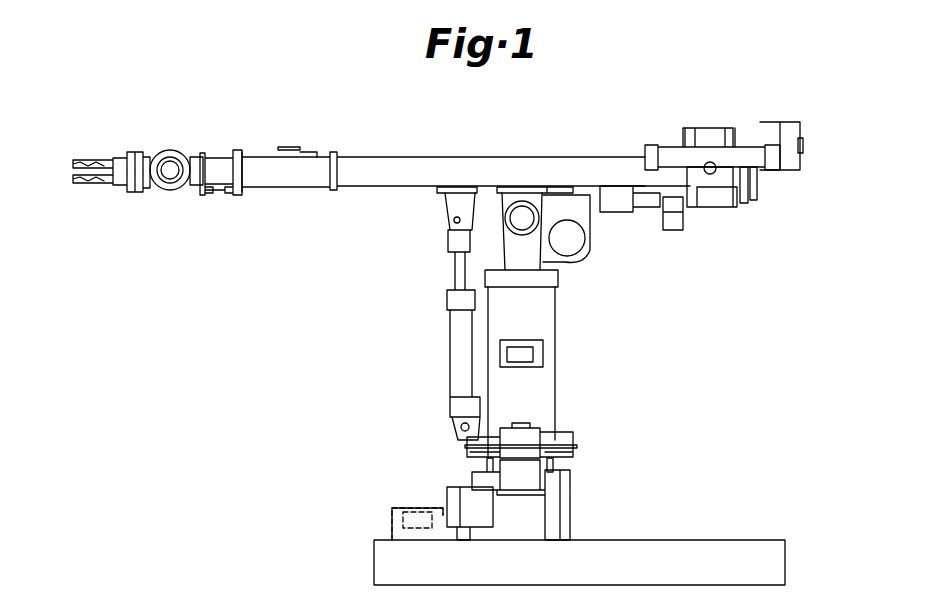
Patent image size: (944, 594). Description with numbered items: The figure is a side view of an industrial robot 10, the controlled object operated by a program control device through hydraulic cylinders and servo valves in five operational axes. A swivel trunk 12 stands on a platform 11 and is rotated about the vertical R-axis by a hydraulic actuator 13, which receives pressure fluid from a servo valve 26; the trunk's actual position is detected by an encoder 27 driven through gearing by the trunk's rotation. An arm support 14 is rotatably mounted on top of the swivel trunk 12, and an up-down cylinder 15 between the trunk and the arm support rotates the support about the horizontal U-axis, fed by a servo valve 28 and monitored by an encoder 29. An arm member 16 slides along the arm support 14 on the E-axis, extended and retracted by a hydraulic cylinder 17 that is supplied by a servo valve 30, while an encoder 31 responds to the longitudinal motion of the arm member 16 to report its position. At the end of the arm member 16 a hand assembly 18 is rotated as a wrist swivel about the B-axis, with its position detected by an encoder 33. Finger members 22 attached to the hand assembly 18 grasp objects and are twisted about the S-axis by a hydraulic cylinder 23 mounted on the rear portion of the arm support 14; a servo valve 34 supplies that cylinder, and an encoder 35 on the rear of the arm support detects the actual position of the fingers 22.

The industrial robot 10 is at (503, 152).
The platform 11 is at (628, 555).
The swivel trunk 12 is at (548, 382).
The hydraulic actuator 13 is at (470, 483).
The arm support 14 is at (456, 162).
The up-down cylinder 15 is at (460, 350).
The arm member 16 is at (218, 172).
The hydraulic cylinder 17 is at (405, 190).
The hand assembly 18 is at (156, 152).
The finger members 22 is at (114, 170).
The hydraulic cylinder 23 is at (668, 148).
The servo valve 26 is at (415, 508).
The encoder 27 is at (530, 445).
The servo valve 28 is at (530, 352).
The encoder 29 is at (575, 245).
The servo valve 30 is at (678, 228).
The encoder 31 is at (720, 205).
The encoder 33 is at (795, 122).
The servo valve 34 is at (652, 210).
The encoder 35 is at (803, 160).